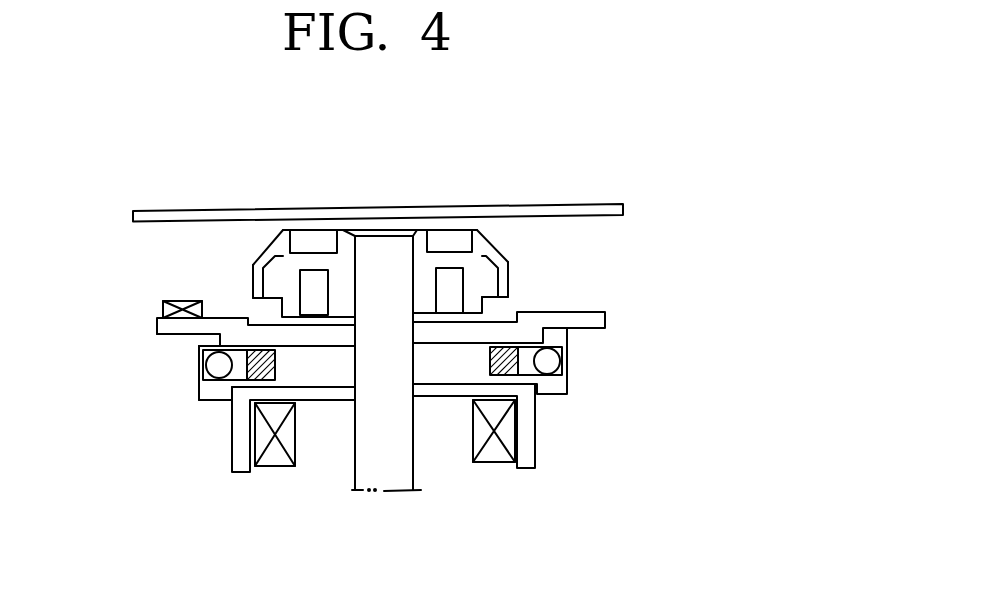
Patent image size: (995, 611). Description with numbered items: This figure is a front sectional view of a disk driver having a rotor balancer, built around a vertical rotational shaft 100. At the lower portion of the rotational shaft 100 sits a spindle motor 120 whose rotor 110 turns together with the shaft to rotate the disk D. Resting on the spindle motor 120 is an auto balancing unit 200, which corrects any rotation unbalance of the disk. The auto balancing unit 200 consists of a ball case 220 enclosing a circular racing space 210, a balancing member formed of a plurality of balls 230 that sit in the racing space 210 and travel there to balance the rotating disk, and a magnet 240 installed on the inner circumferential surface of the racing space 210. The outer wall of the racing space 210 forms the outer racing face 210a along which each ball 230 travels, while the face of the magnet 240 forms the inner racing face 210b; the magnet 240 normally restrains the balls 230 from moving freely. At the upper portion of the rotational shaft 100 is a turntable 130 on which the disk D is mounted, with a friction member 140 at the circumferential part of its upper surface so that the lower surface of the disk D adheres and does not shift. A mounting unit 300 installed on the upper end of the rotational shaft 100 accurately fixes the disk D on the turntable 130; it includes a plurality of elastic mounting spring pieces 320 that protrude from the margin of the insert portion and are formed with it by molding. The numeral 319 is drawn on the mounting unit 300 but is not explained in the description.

The rotational shaft 100 is at (385, 484).
The rotor 110 is at (275, 458).
The spindle motor 120 is at (233, 458).
The turntable 130 is at (170, 333).
The friction member 140 is at (164, 312).
The auto balancing unit 200 is at (580, 383).
The racing space 210 is at (236, 374).
The outer racing face 210a is at (565, 372).
The inner racing face 210b is at (500, 402).
The ball case 220 is at (198, 367).
The ball 230 is at (548, 370).
The magnet 240 is at (503, 450).
The mounting unit 300 is at (226, 268).
The rotor flange 319 is at (262, 247).
The mounting spring piece 320 is at (509, 280).
The disk D is at (293, 211).